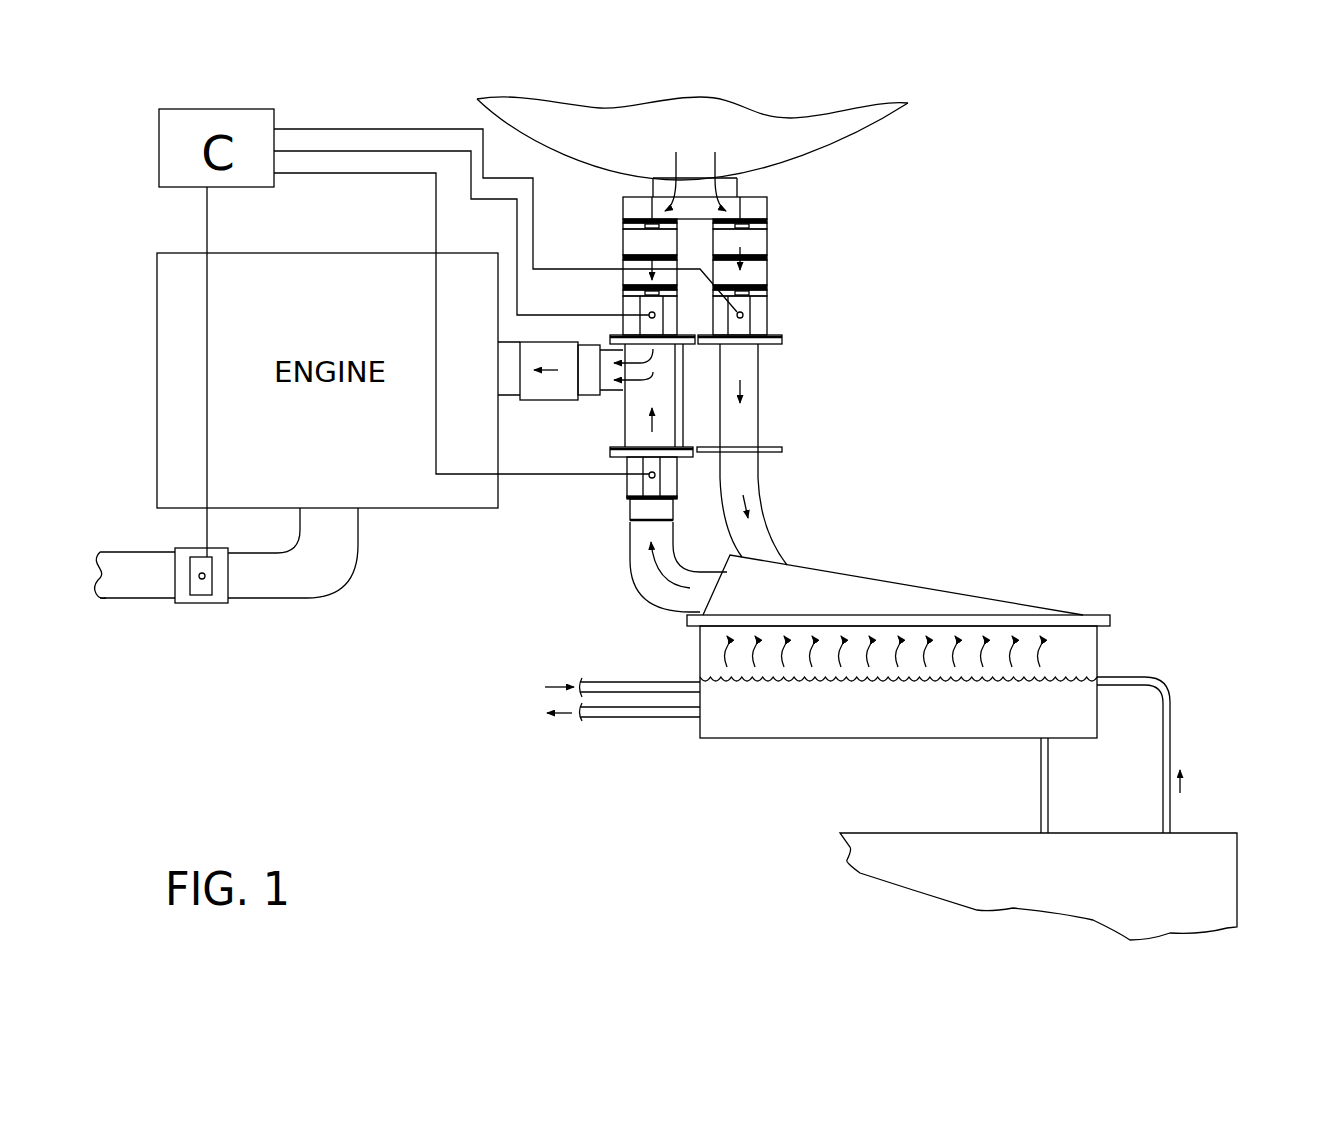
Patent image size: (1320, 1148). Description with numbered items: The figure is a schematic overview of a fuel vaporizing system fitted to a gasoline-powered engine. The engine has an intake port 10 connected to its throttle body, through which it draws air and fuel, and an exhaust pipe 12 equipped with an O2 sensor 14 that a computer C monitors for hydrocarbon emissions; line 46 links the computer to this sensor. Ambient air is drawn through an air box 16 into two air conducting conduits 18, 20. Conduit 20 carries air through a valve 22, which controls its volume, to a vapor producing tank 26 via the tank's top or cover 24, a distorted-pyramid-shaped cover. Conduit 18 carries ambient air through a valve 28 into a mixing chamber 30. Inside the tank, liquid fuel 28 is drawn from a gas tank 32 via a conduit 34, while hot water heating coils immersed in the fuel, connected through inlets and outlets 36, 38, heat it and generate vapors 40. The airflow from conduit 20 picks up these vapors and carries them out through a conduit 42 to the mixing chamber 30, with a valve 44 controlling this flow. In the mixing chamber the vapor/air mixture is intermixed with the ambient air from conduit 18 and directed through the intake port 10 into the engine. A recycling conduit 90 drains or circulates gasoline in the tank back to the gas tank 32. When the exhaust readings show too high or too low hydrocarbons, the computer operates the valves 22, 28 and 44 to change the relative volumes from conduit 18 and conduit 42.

The intake port 10 is at (507, 387).
The exhaust pipe 12 is at (290, 587).
The O2 sensor 14 is at (198, 590).
The air box 16 is at (758, 209).
The air conducting conduit 18 is at (627, 242).
The air conducting conduit 20 is at (753, 245).
The valve 22 is at (747, 319).
The top or cover 24 is at (847, 577).
The vapor producing tank 26 is at (802, 738).
The valve / liquid fuel 28 is at (648, 313).
The mixing chamber 30 is at (662, 383).
The gas tank 32 is at (1220, 867).
The conduit 34 is at (1123, 677).
The heating coil inlet 36 is at (612, 685).
The heating coil outlet 38 is at (610, 717).
The vapors 40 is at (952, 655).
The conduit 42 is at (635, 556).
The valve 44 is at (647, 483).
The control line 46 is at (207, 207).
The recycling conduit 90 is at (1040, 770).